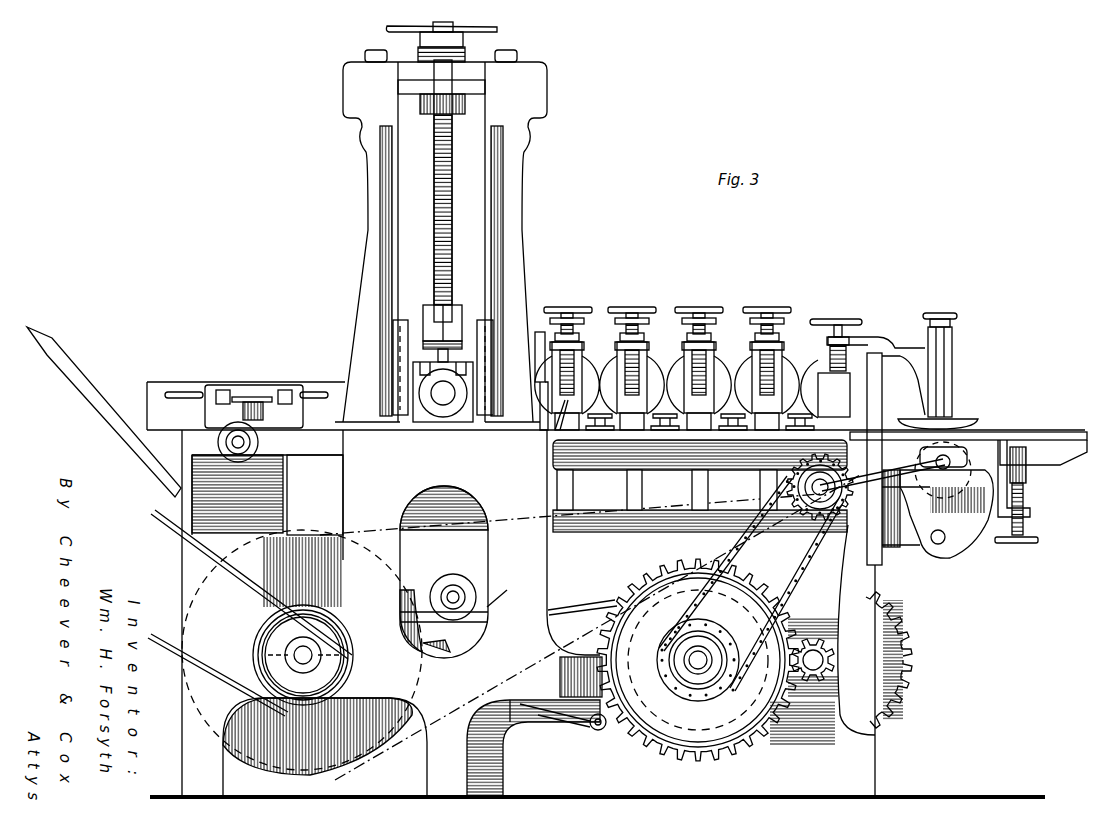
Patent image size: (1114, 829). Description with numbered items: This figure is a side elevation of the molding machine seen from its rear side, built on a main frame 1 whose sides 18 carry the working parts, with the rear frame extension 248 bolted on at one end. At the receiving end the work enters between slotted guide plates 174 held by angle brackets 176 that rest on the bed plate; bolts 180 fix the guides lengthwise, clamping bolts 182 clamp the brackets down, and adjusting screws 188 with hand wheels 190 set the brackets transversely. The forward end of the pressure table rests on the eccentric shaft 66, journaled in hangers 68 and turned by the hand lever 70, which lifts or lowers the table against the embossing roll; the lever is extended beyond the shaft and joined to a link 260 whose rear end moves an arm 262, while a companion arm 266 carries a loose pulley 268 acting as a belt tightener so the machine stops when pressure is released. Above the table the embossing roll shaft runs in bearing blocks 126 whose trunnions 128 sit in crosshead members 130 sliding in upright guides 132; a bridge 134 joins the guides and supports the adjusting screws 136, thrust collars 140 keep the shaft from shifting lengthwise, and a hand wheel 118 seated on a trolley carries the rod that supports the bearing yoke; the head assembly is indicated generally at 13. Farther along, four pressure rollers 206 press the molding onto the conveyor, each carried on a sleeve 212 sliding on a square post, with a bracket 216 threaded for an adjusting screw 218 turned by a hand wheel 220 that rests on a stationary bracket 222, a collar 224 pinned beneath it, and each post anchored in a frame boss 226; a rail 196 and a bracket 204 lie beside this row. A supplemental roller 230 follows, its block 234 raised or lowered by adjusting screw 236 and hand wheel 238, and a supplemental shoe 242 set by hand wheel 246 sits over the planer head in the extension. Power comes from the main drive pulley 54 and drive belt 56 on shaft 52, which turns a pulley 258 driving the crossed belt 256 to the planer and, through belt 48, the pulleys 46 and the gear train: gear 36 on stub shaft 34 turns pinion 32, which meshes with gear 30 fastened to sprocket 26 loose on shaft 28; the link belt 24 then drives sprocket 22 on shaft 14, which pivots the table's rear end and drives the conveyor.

The main frame 1 is at (860, 585).
The head 13 is at (472, 68).
The shaft 14 is at (800, 465).
The sides of the main frame 18 is at (740, 515).
The sprocket 22 is at (805, 525).
The link belt 24 is at (698, 660).
The sprocket 26 is at (715, 635).
The shaft 28 is at (703, 672).
The gear 30 is at (655, 720).
The pinion 32 is at (818, 636).
The stub shaft 34 is at (818, 668).
The gear 36 is at (905, 650).
The belt-driven pulleys 46 is at (770, 750).
The belt 48 is at (557, 724).
The shaft 52 is at (295, 640).
The main drive pulley 54 is at (350, 675).
The drive belt 56 is at (265, 650).
The eccentric shaft 66 is at (190, 548).
The hangers 68 is at (275, 520).
The hand lever 70 is at (120, 422).
The hand wheel 118 is at (497, 30).
The bearing blocks 126 is at (428, 420).
The trunnions 128 is at (492, 418).
The crosshead members 130 is at (450, 312).
The upright guides 132 is at (492, 244).
The bridge parts 134 is at (352, 75).
The adjusting screws 136 is at (465, 158).
The thrust collars 140 is at (456, 405).
The guides 174 is at (162, 385).
The angle brackets 176 is at (215, 407).
The bolts 180 is at (285, 392).
The clamping bolts 182 is at (280, 408).
The adjusting screws 188 is at (230, 443).
The hand wheels 190 is at (262, 443).
The rail 196 is at (668, 440).
The bracket 204 is at (535, 345).
The rollers 206 is at (723, 372).
The sleeve 212 is at (740, 428).
The bracket 216 is at (780, 345).
The adjusting screw 218 is at (728, 340).
The hand wheel 220 is at (708, 307).
The stationary bracket 222 is at (718, 318).
The collar 224 is at (785, 320).
The boss 226 is at (534, 443).
The supplemental pressure roller 230 is at (818, 395).
The block 234 is at (832, 398).
The adjusting screw 236 is at (828, 362).
The hand wheel 238 is at (860, 312).
The supplemental shoe 242 is at (945, 415).
The hand wheel 246 is at (940, 313).
The frame extension 248 is at (953, 503).
The belt 256 is at (480, 690).
The pulley 258 is at (340, 762).
The link 260 is at (530, 740).
The arm 262 is at (596, 732).
The arm 266 is at (510, 588).
The loose pulley 268 is at (452, 575).